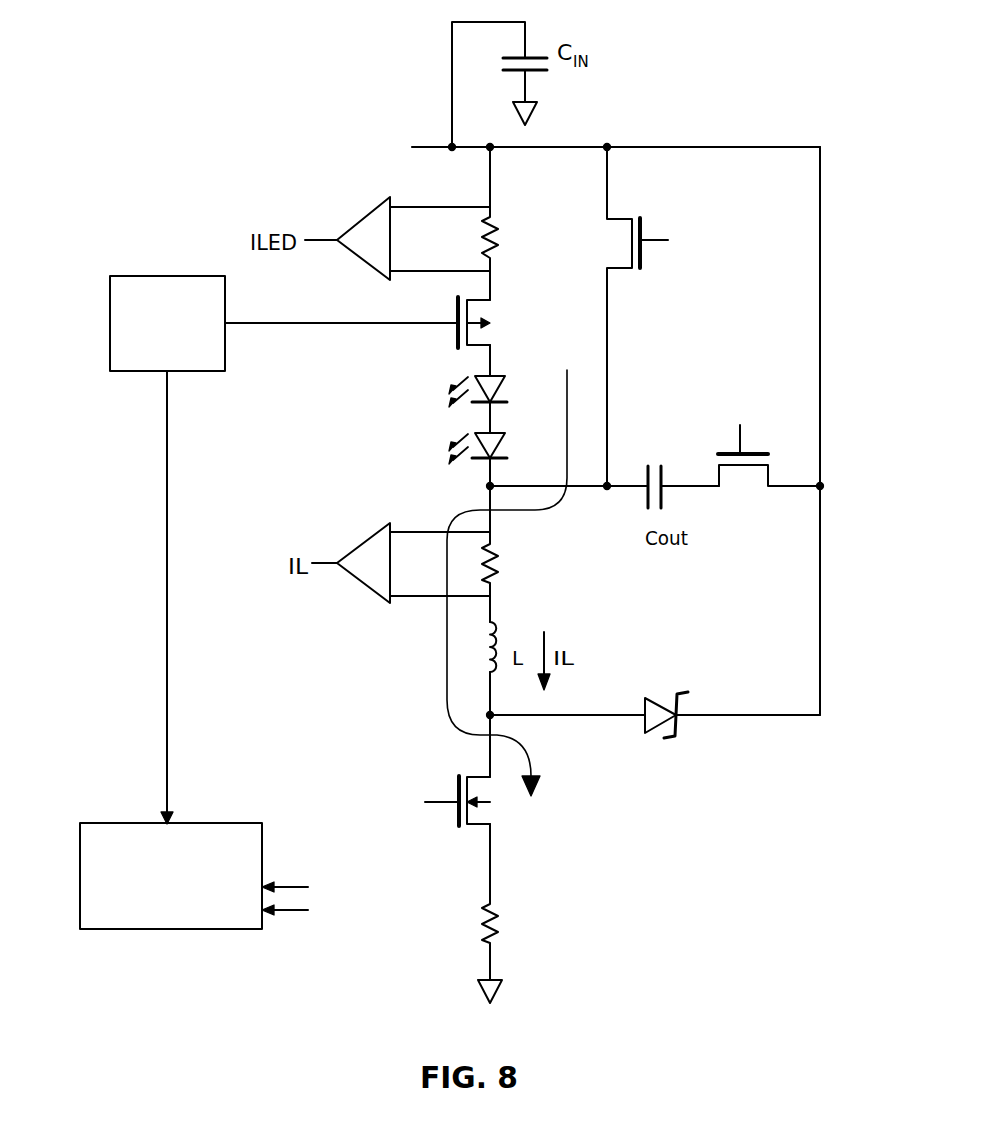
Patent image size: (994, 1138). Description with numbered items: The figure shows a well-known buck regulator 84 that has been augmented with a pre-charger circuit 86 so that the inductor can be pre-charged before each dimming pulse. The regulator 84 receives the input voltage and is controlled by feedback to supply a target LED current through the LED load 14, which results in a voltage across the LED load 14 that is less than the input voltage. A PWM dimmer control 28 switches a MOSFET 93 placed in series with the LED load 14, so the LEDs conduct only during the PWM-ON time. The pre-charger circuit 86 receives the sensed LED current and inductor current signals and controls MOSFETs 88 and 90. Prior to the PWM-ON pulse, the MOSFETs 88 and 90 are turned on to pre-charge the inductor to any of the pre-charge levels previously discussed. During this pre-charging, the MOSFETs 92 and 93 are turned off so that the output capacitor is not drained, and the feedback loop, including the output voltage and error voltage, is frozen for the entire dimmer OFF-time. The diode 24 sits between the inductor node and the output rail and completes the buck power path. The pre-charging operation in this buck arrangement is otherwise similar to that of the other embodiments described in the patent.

The buck regulator 84 is at (325, 125).
The PWM dimmer control circuit 28 is at (190, 276).
The MOSFET 93 is at (493, 335).
The MOSFET 88 is at (610, 248).
The LED load 14 is at (414, 418).
The MOSFET 92 is at (745, 482).
The diode 24 is at (651, 698).
The MOSFET 90 is at (455, 818).
The pre-charger circuit 86 is at (78, 851).